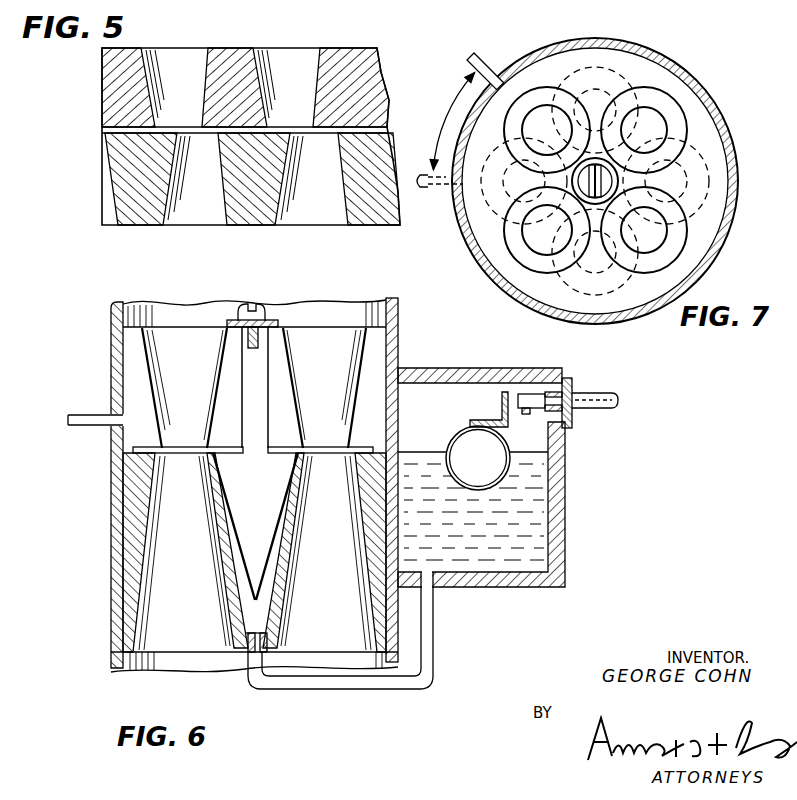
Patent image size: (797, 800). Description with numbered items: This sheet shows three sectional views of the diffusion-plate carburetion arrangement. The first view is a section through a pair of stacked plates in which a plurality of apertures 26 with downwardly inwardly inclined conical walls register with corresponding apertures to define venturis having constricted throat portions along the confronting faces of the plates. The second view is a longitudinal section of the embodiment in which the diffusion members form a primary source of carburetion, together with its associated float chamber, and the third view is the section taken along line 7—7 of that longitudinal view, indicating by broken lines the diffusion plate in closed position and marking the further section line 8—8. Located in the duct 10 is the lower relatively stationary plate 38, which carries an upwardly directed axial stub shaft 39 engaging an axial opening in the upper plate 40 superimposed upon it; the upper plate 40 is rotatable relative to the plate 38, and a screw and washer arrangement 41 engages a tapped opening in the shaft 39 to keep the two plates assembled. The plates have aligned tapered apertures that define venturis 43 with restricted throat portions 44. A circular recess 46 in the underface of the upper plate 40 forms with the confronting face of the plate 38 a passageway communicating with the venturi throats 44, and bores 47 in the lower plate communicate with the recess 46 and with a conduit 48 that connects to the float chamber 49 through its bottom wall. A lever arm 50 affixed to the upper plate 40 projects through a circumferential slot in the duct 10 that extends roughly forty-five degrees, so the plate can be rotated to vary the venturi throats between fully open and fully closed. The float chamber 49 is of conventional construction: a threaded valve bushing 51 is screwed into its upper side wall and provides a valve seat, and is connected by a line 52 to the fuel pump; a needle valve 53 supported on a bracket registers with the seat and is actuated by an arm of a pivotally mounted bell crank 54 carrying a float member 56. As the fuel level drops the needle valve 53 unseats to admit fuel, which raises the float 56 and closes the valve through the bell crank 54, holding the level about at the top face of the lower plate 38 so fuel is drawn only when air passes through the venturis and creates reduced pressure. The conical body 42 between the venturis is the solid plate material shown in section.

In FIG. 6, the section line 7- 7 is at (77, 286).
In FIG. 7, the section line 8- 8 is at (567, 151).
In FIG. 7, the duct 10 is at (725, 231).
In FIG. 6, the duct 10 is at (399, 347).
In FIG. 5, the apertures 26 is at (294, 59).
In FIG. 6, the lower relatively stationary plate 38 is at (135, 506).
In FIG. 6, the axial stub shaft 39 is at (286, 337).
In FIG. 6, the upper plate 40 is at (150, 357).
In FIG. 7, the screw and washer arrangement 41 is at (610, 167).
In FIG. 6, the screw and washer arrangement 41 is at (258, 321).
In FIG. 6, the lower cone body 42 is at (161, 464).
In FIG. 7, the venturis 43 is at (651, 254).
In FIG. 6, the venturis 43 is at (351, 342).
In FIG. 6, the restricted throat portions 44 is at (182, 446).
In FIG. 6, the circular recess 46 is at (304, 444).
In FIG. 6, the bores 47 is at (272, 563).
In FIG. 6, the conduit 48 is at (357, 688).
In FIG. 6, the float chamber 49 is at (563, 546).
In FIG. 6, the lever arm 50 is at (90, 428).
In FIG. 6, the threaded valve bushing 51 is at (575, 383).
In FIG. 6, the line 52 is at (616, 396).
In FIG. 6, the needle valve 53 is at (532, 392).
In FIG. 6, the bell crank 54 is at (498, 420).
In FIG. 6, the float member 56 is at (462, 449).